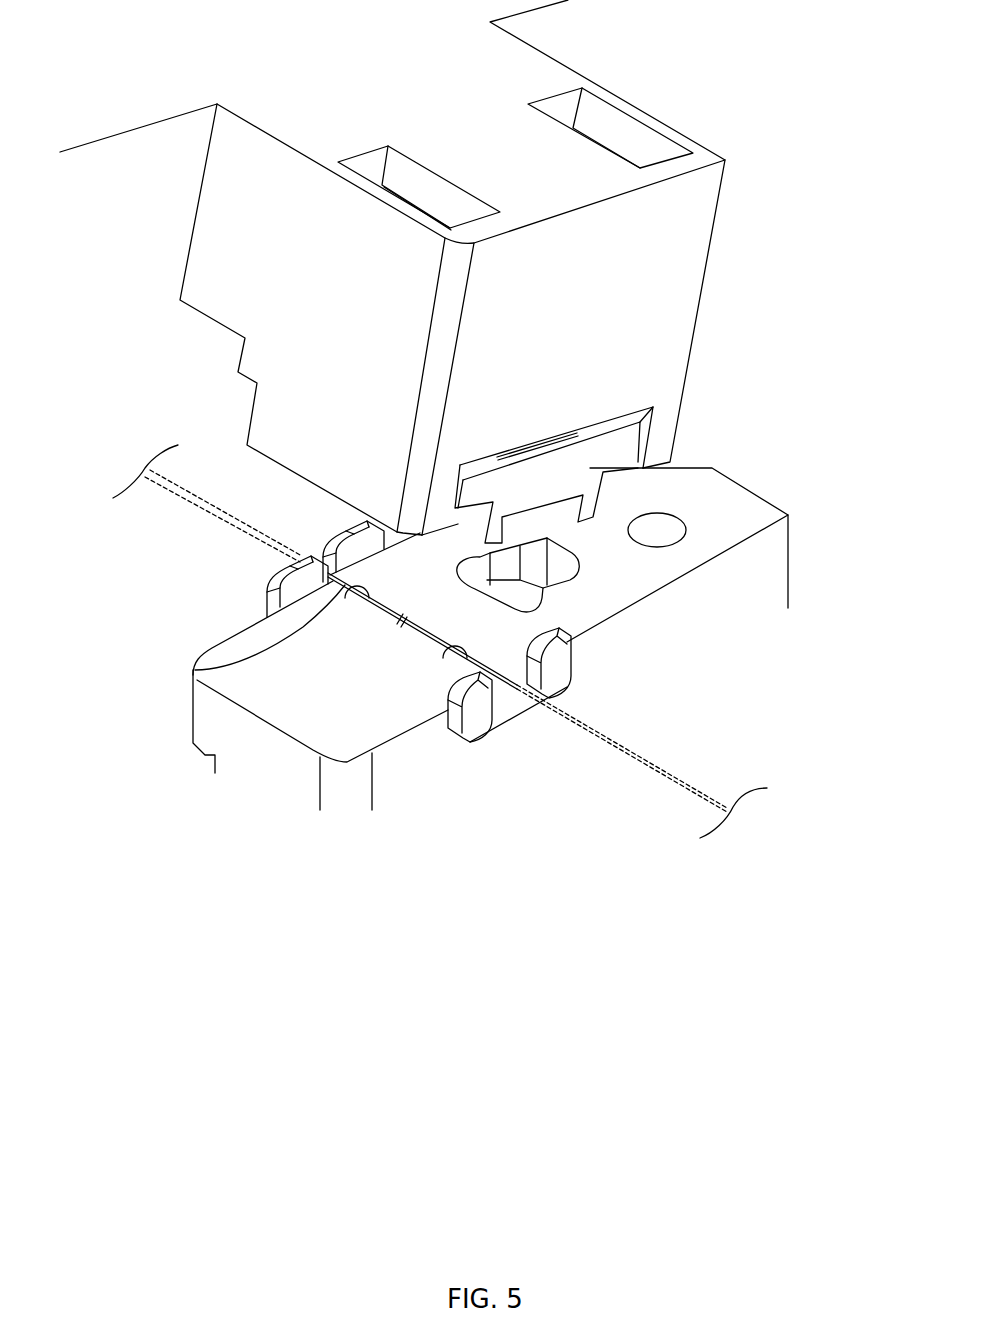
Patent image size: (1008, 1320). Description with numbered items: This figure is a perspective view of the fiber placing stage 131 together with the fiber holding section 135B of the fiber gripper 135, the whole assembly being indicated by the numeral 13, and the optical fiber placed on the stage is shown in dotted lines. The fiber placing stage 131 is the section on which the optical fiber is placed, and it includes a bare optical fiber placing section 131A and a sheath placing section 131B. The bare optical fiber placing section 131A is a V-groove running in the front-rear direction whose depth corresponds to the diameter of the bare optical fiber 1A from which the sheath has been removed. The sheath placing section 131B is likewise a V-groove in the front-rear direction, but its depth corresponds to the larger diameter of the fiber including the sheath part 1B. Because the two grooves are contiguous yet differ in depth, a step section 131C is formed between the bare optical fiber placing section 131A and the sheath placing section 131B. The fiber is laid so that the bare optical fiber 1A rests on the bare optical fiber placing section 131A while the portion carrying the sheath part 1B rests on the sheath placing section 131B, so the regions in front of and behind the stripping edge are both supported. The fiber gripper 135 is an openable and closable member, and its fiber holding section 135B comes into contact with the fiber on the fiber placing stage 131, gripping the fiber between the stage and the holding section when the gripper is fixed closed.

The fiber fixing section 13 is at (478, 371).
The fiber gripper 135 is at (640, 272).
The fiber holding section 135B is at (555, 517).
The fiber placing stage 131 is at (323, 681).
The bare optical fiber placing section 131A is at (447, 643).
The sheath placing section 131B is at (192, 670).
The step section 131C is at (407, 622).
The bare optical fiber 1A is at (660, 767).
The sheath part 1B is at (178, 502).